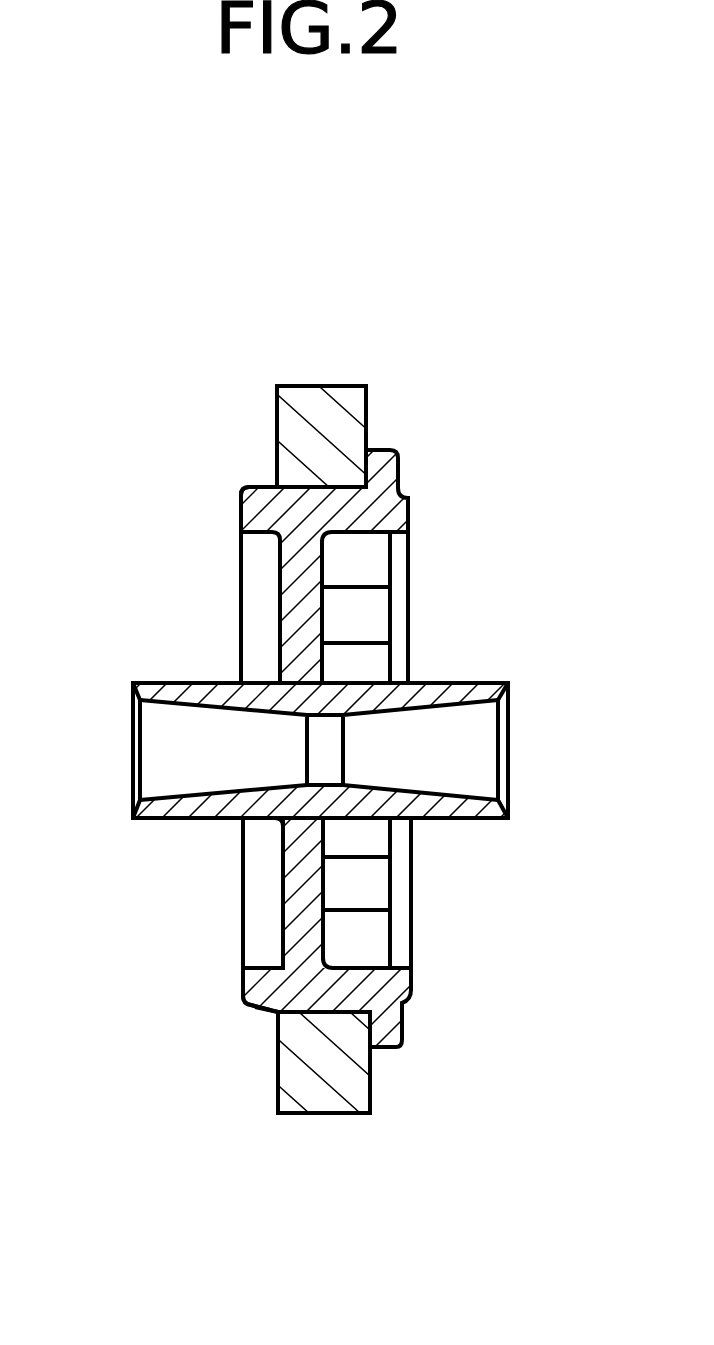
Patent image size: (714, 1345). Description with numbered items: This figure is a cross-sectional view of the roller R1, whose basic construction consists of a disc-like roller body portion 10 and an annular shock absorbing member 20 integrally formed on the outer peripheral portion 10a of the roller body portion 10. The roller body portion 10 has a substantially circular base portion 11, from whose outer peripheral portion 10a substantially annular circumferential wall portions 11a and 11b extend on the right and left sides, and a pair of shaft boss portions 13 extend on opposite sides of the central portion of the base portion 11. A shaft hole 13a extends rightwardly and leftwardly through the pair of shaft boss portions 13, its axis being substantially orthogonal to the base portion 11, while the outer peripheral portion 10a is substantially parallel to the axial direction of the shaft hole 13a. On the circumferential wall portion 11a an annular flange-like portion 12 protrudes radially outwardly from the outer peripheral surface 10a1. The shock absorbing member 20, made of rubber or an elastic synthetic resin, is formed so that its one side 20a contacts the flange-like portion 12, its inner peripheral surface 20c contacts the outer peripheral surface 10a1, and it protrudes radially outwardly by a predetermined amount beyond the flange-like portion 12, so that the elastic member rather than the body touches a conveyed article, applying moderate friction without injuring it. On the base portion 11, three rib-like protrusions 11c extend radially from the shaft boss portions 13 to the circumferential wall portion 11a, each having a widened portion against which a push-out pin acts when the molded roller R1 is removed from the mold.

The roller body portion 10 is at (280, 856).
The outer peripheral portion 10a is at (253, 490).
The outer peripheral surface 10a1 is at (263, 487).
The base portion 11 is at (280, 902).
The circumferential wall portion 11a is at (402, 995).
The circumferential wall portion 11b is at (255, 988).
The rib-like protrusions 11c is at (367, 568).
The flange-like portion 12 is at (397, 450).
The shaft boss portion 13 is at (173, 683).
The shaft hole 13a is at (465, 760).
The shock absorbing member 20 is at (343, 407).
The one side 20a is at (367, 410).
The inner peripheral surface 20c is at (262, 543).
The roller R1 is at (357, 765).